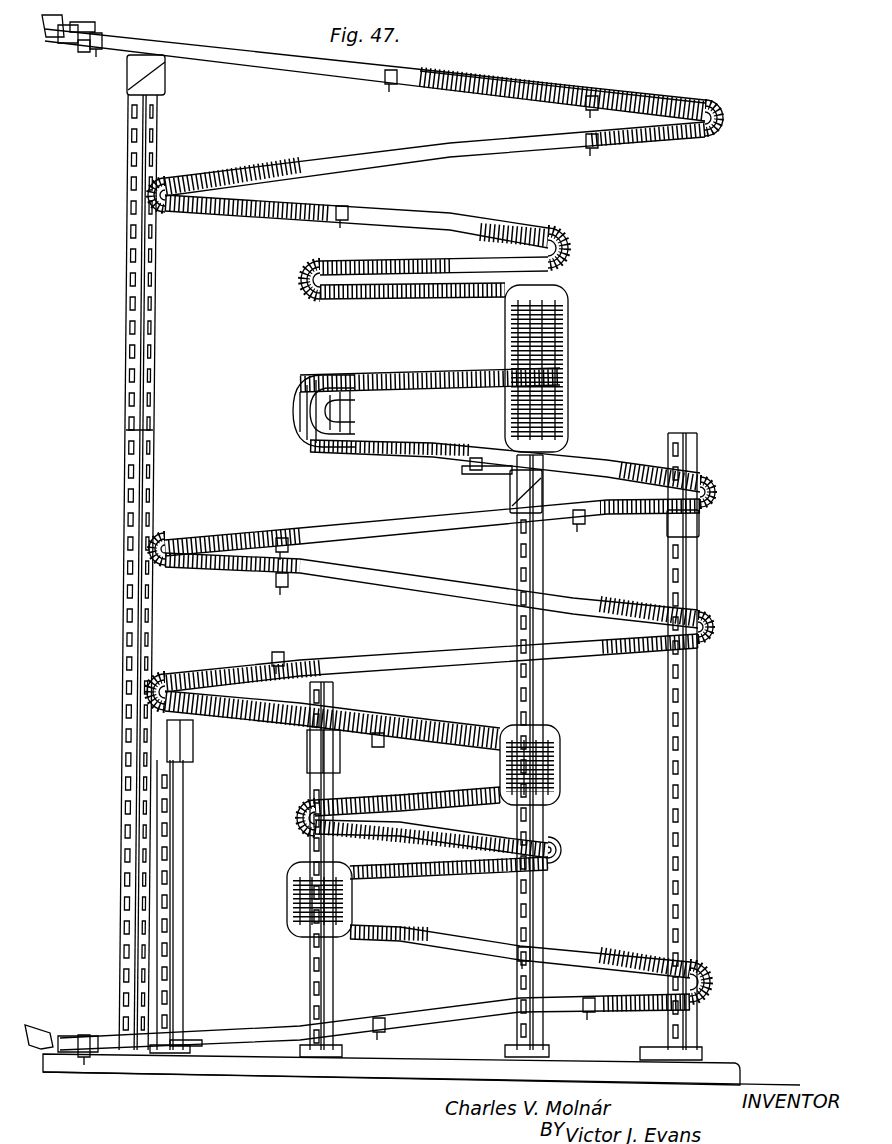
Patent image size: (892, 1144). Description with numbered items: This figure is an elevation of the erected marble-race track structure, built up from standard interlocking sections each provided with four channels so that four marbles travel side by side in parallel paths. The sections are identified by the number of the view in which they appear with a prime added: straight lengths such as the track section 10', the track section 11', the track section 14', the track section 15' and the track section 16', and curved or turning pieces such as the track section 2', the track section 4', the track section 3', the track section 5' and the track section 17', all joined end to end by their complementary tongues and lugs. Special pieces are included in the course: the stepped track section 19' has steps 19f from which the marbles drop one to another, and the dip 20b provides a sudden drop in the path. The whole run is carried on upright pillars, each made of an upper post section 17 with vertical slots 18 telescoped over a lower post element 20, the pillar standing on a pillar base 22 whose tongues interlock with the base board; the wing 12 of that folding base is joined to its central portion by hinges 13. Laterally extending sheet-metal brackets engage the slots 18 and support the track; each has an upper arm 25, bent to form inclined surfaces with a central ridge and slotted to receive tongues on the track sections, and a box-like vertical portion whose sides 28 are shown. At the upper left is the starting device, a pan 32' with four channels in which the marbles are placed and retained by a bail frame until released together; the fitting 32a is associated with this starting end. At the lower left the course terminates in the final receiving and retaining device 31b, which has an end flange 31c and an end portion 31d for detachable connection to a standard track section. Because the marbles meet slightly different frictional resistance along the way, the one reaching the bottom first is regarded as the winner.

The track section 10' is at (375, 526).
The track section 14' is at (562, 73).
The track section 2' is at (472, 489).
The track section 4' is at (453, 566).
The track section 11' is at (440, 573).
The track section 17' is at (434, 462).
The track section 3' is at (430, 549).
The dip 20b is at (569, 345).
The track section 19' is at (301, 411).
The steps 19f is at (350, 420).
The track section 5' is at (423, 603).
The track section 16' is at (422, 839).
The track section 15' is at (375, 1012).
The upper post section 17 is at (415, 572).
The vertical slots 18 is at (150, 130).
The lower post element 20 is at (155, 820).
The bracket sides 28 is at (166, 82).
The bracket arm 25 is at (140, 68).
The hinges 13 is at (190, 1048).
The pillar base 22 is at (552, 1050).
The wing 12 is at (378, 1070).
The end flange 31c is at (32, 1022).
The receiving and retaining device 31b is at (65, 1036).
The end portion 31d is at (88, 1060).
The top fitting 32a is at (90, 25).
The pan 32' is at (78, 53).